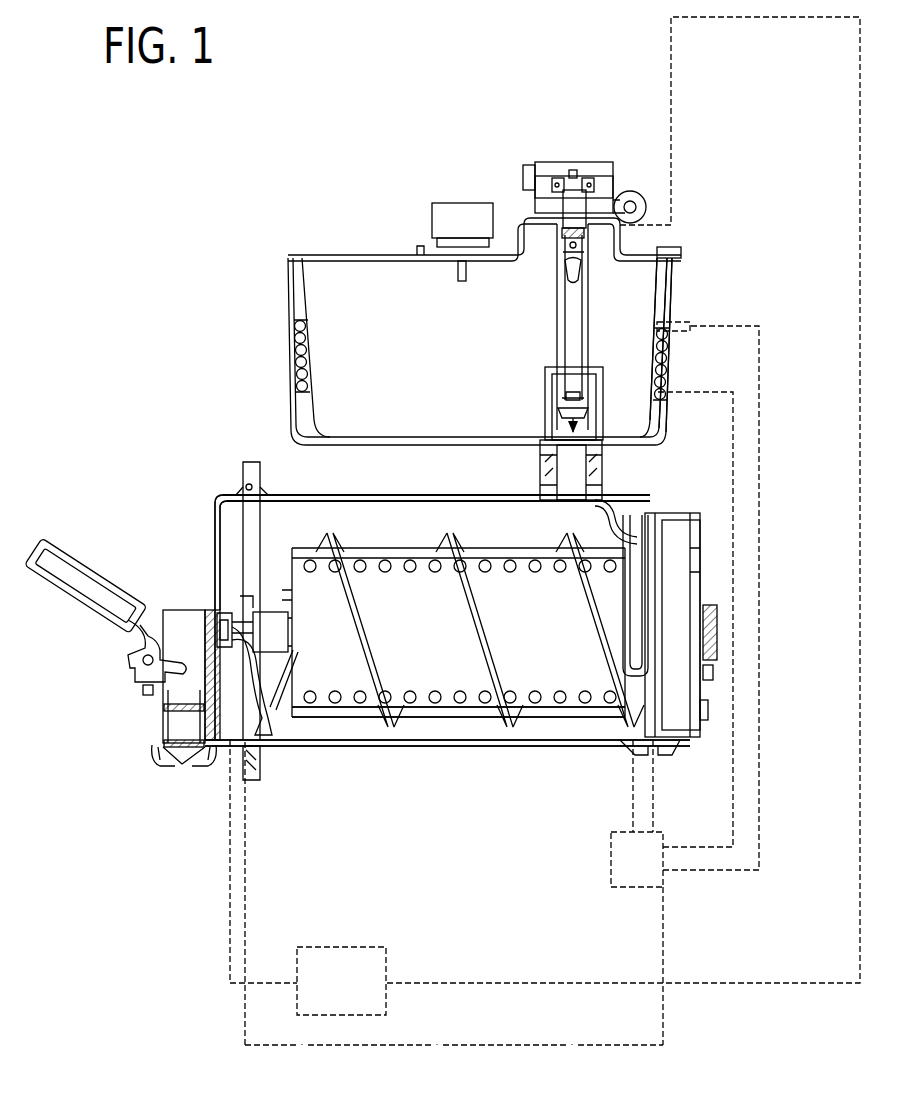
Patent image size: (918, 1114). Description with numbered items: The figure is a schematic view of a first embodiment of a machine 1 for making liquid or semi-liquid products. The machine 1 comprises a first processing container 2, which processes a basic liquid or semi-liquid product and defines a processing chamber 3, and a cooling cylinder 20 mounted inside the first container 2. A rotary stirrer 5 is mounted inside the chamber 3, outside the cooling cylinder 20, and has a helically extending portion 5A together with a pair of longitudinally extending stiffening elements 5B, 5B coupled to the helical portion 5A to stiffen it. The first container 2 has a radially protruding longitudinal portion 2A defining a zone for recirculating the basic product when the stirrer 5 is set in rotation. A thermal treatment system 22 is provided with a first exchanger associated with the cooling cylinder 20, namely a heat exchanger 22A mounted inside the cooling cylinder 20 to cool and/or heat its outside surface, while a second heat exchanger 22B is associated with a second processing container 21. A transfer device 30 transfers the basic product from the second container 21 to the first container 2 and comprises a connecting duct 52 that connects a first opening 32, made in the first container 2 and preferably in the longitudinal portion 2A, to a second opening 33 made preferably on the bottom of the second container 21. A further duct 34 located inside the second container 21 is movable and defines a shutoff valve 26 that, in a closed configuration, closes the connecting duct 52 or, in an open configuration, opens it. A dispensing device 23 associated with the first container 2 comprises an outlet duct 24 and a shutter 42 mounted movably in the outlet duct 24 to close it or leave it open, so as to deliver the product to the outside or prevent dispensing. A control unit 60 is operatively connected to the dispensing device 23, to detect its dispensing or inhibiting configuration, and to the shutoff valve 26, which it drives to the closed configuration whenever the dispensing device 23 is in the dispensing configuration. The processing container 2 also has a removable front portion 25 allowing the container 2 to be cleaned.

The machine 1 is at (758, 280).
The first processing container 2 is at (312, 539).
The processing chamber 3 is at (447, 624).
The radially protruding longitudinal portion 2A is at (283, 490).
The rotary stirrer 5 is at (513, 623).
The helically extending portion 5A is at (495, 662).
The stiffening elements 5B is at (425, 538).
The cooling cylinder 20 is at (422, 668).
The second processing container 21 is at (390, 339).
The thermal treatment system 22 is at (650, 872).
The heat exchanger 22A is at (578, 708).
The second heat exchanger 22B is at (290, 335).
The dispensing device 23 is at (145, 590).
The outlet duct 24 is at (224, 718).
The front portion 25 is at (212, 537).
The shutoff valve 26 is at (616, 386).
The transfer device 30 is at (661, 345).
The first opening 32 is at (595, 467).
The second opening 33 is at (578, 402).
The duct 34 is at (548, 287).
The shutter 42 is at (172, 764).
The connecting duct 52 is at (606, 494).
The control unit 60 is at (350, 993).